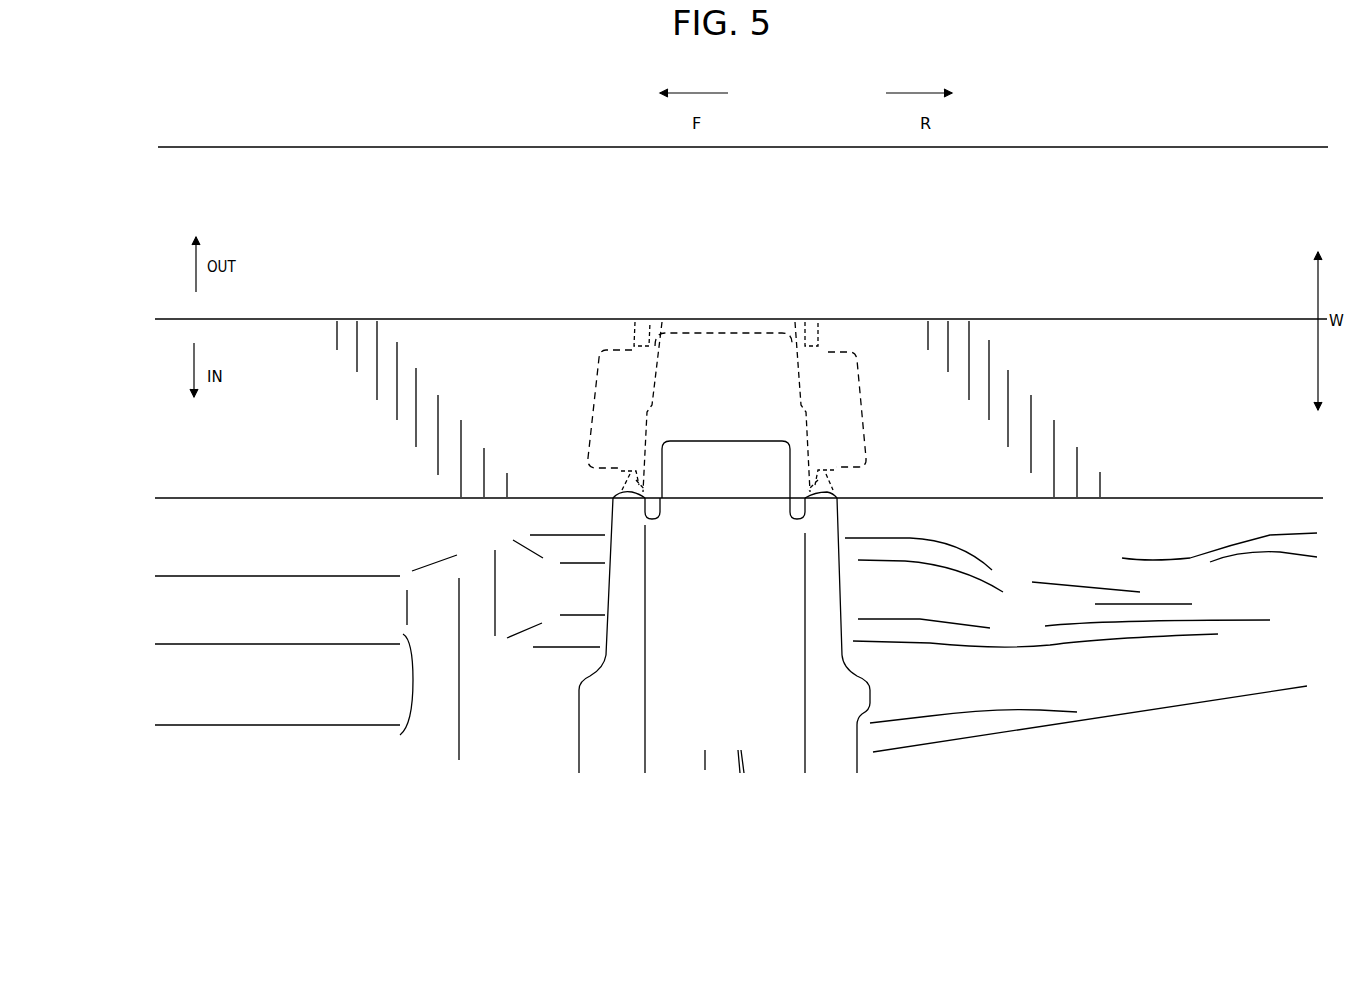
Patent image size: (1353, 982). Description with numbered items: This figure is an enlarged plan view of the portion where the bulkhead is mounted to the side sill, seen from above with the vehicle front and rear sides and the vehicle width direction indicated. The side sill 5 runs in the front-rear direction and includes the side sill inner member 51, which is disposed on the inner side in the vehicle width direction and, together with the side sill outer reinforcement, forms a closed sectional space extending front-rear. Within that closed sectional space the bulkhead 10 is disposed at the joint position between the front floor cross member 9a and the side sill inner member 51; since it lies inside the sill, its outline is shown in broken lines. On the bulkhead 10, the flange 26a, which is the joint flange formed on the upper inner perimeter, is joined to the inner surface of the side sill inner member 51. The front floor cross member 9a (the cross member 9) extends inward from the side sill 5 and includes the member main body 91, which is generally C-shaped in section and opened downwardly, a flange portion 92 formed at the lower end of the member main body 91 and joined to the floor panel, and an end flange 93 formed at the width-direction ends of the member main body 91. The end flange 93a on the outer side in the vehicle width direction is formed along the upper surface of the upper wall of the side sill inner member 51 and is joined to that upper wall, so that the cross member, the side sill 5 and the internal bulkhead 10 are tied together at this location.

The side sill 5 is at (515, 218).
The side sill inner member 51 is at (287, 348).
The bulkhead 10 is at (723, 340).
The flange 26a is at (601, 386).
The end flange 93a is at (722, 462).
The end flange 93 is at (725, 568).
The front floor cross member 9a is at (620, 602).
The drain pipe 9 is at (690, 632).
The flange portion 92 is at (590, 746).
The member main body 91 is at (667, 758).